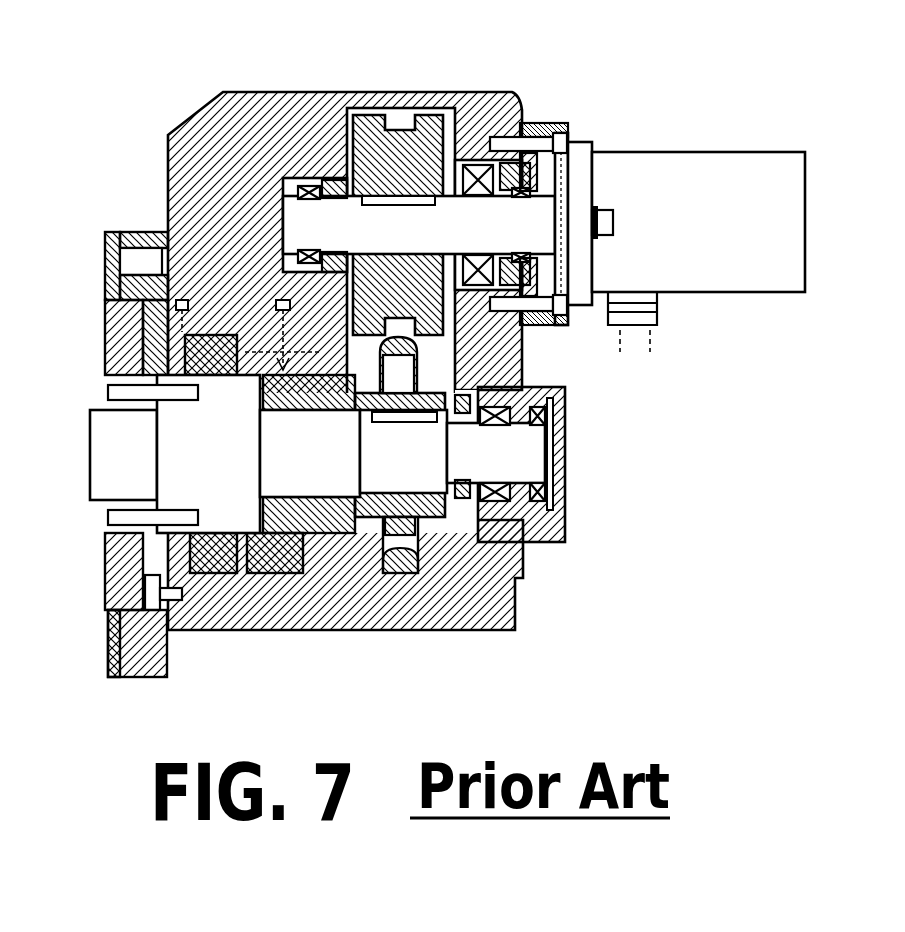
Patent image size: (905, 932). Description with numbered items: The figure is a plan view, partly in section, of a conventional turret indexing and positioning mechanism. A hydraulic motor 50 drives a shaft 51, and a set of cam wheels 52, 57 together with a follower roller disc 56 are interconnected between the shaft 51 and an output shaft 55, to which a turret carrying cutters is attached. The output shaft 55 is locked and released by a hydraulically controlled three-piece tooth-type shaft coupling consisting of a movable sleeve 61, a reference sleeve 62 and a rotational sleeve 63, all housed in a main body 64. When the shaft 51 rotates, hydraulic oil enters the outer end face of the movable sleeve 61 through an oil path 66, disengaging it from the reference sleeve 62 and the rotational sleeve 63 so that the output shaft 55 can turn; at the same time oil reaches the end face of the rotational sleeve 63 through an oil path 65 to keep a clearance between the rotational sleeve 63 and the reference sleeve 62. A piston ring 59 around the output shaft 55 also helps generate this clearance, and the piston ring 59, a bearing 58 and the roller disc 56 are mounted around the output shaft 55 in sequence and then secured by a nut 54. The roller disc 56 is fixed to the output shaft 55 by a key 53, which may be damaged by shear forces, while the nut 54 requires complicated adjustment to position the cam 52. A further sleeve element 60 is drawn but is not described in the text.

The hydraulic motor 50 is at (675, 170).
The shaft 51 is at (548, 217).
The cam wheel 52 is at (395, 145).
The key 53 is at (417, 420).
The nut 54 is at (518, 583).
The output shaft 55 is at (273, 467).
The follower roller disc 56 is at (422, 507).
The cam wheel 57 is at (372, 560).
The bearing 58 is at (385, 560).
The piston ring 59 is at (308, 545).
The sleeve 60 is at (285, 553).
The movable sleeve 61 is at (227, 547).
The reference sleeve 62 is at (107, 593).
The rotational sleeve 63 is at (110, 572).
The main body 64 is at (177, 632).
The oil path 65 is at (153, 260).
The oil path 66 is at (270, 302).